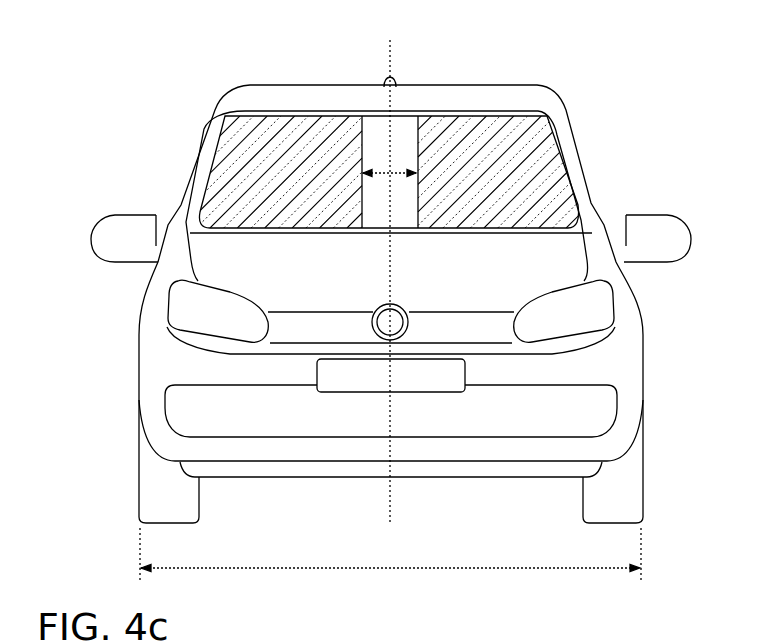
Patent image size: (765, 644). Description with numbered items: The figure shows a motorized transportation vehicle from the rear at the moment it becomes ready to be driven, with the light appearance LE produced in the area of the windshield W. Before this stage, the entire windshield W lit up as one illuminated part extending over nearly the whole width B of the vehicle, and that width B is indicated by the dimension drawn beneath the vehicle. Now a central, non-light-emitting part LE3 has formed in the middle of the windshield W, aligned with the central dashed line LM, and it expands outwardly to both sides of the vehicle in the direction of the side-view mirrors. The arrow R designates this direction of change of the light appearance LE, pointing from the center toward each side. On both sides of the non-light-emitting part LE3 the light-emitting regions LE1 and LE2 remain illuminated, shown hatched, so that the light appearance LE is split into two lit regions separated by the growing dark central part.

The windshield W is at (282, 153).
The light appearance LE is at (377, 245).
The light-emitting region LE1 is at (515, 185).
The light-emitting region LE2 is at (218, 200).
The central non-light-emitting part LE3 is at (402, 135).
The direction of change of the light appearance R is at (390, 173).
The longitudinal median plane LM is at (390, 63).
The width of the motorized transportation vehicle B is at (428, 567).